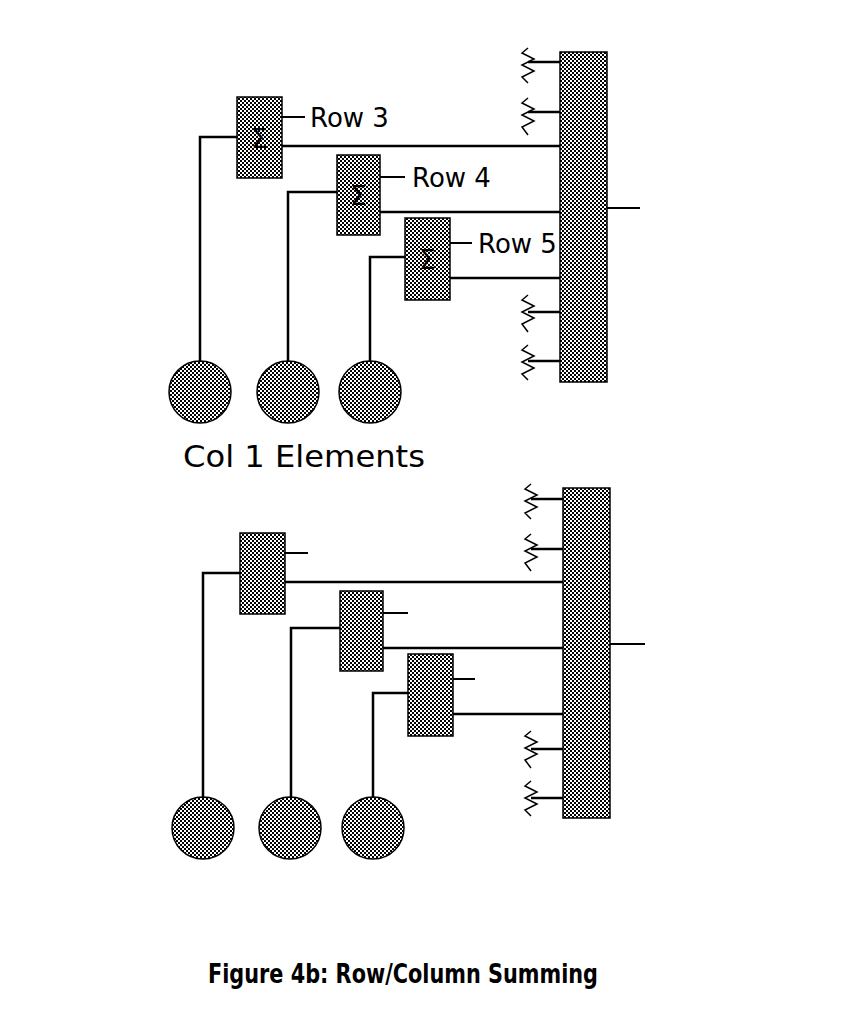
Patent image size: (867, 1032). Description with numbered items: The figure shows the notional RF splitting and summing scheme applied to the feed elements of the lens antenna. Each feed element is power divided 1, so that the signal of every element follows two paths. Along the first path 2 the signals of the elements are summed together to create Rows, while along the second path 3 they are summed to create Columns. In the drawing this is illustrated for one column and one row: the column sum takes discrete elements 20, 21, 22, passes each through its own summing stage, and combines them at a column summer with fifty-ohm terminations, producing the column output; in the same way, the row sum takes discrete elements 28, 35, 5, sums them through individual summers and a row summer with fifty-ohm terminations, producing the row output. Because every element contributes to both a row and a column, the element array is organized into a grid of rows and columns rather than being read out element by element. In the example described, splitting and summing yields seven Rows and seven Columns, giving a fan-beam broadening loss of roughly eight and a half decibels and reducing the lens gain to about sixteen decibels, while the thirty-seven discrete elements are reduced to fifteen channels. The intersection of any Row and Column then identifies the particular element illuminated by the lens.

The power-divided element 1 is at (205, 546).
The row summing path 2 is at (633, 551).
The column summing path 3 is at (613, 134).
The column 1 antenna element 20 is at (200, 392).
The column 1 antenna element 21 is at (288, 392).
The column 1 antenna element 22 is at (370, 392).
The row 1 antenna element 28 is at (203, 828).
The row 1 antenna element 35 is at (290, 828).
The row 1 antenna element 5 is at (373, 828).